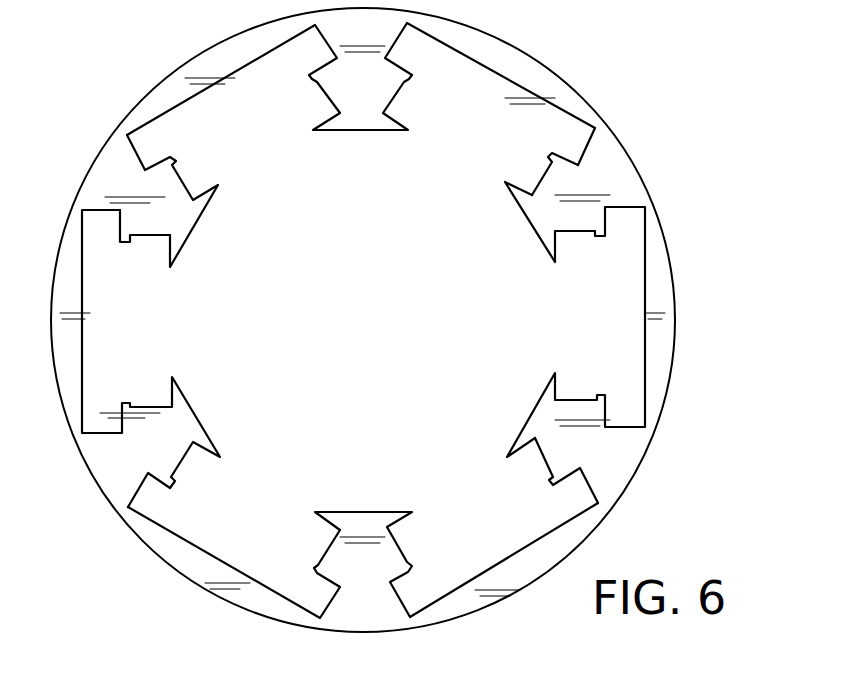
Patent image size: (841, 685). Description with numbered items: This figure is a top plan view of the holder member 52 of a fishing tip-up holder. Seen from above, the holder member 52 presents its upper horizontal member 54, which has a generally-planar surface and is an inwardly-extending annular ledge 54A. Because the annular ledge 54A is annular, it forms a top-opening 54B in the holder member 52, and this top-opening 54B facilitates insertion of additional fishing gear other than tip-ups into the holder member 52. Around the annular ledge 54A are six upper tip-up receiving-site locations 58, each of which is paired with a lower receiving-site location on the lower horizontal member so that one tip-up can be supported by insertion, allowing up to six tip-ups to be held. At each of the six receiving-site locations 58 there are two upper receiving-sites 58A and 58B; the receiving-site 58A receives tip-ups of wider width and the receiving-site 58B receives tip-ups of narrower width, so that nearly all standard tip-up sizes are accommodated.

The holder member 52 is at (108, 108).
The upper horizontal member 54 is at (128, 177).
The annular ledge 54A is at (602, 170).
The top-opening 54B is at (520, 303).
The upper tip-up receiving-site location 58 is at (142, 308).
The upper receiving-site 58A is at (595, 492).
The upper receiving-site 58B is at (513, 467).